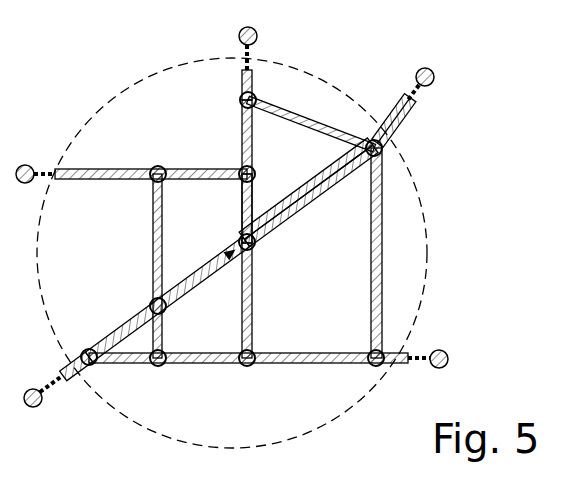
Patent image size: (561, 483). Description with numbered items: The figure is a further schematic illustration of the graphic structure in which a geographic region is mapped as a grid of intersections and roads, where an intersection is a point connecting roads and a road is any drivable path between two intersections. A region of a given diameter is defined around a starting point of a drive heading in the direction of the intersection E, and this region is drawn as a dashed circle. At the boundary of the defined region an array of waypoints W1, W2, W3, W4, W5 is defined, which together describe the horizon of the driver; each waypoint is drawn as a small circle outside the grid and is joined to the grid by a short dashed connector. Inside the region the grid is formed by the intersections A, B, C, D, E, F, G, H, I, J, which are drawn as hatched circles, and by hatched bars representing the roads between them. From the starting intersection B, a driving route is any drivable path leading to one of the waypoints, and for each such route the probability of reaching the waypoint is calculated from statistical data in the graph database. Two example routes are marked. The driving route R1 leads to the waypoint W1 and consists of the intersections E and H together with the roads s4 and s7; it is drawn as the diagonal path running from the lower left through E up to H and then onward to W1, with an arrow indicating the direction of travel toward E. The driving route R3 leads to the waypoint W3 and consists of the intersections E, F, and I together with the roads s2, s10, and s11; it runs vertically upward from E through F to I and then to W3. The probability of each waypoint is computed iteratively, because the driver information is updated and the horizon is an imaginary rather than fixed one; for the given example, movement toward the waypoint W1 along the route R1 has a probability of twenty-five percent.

The intersection A is at (82, 345).
The intersection B is at (150, 297).
The intersection C is at (149, 189).
The intersection D is at (154, 372).
The intersection E is at (238, 232).
The intersection F is at (240, 163).
The intersection G is at (243, 372).
The intersection H is at (365, 133).
The intersection I is at (242, 100).
The intersection J is at (367, 371).
The waypoint W1 is at (441, 84).
The waypoint W2 is at (32, 387).
The waypoint W3 is at (267, 43).
The waypoint W4 is at (28, 159).
The waypoint W5 is at (437, 346).
The road s2 is at (235, 208).
The road s4 is at (306, 188).
The road s7 is at (399, 121).
The road s10 is at (311, 124).
The road s11 is at (268, 85).
The driving route R1 is at (231, 252).
The driving route R3 is at (266, 196).